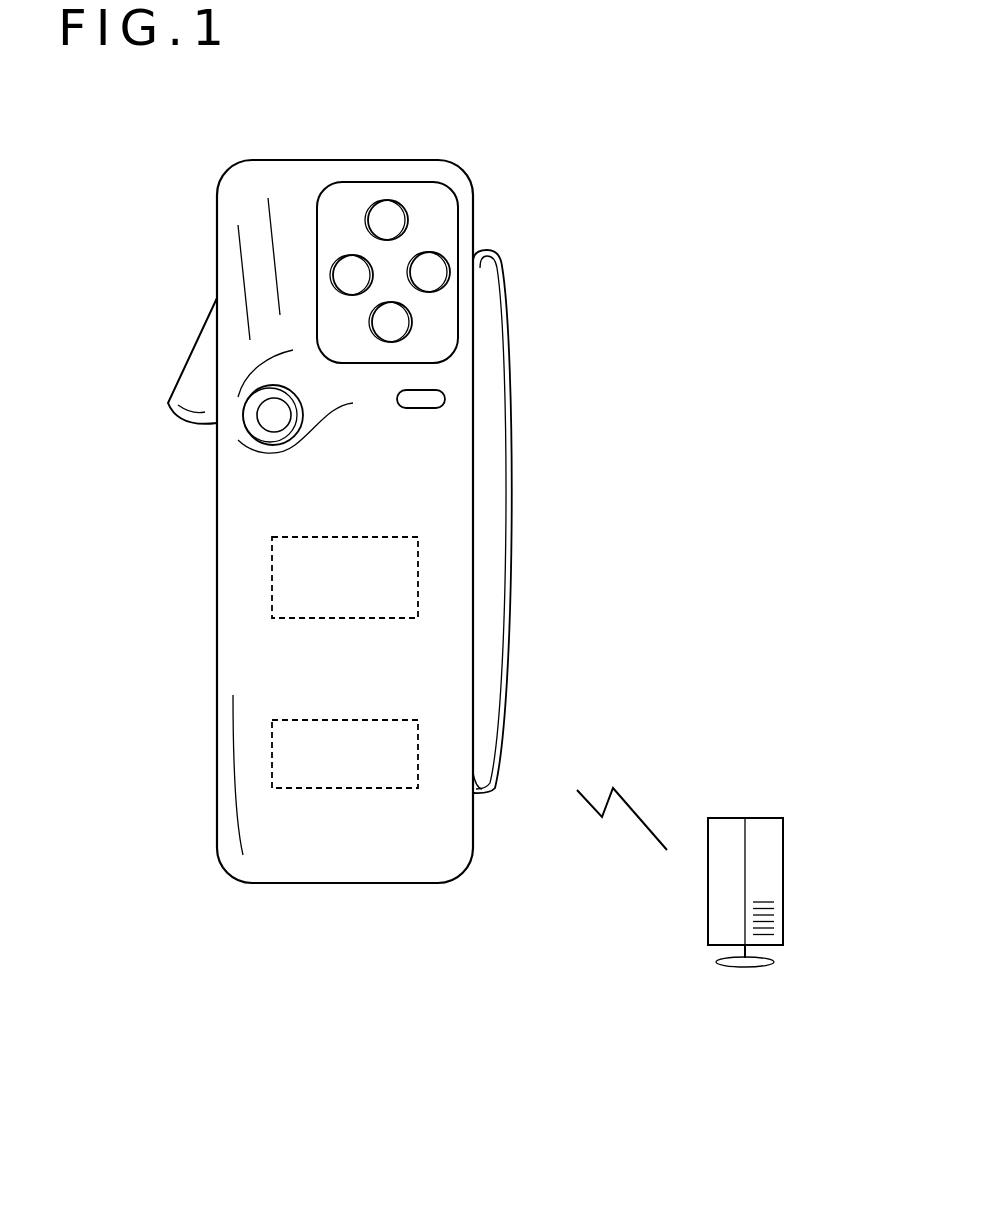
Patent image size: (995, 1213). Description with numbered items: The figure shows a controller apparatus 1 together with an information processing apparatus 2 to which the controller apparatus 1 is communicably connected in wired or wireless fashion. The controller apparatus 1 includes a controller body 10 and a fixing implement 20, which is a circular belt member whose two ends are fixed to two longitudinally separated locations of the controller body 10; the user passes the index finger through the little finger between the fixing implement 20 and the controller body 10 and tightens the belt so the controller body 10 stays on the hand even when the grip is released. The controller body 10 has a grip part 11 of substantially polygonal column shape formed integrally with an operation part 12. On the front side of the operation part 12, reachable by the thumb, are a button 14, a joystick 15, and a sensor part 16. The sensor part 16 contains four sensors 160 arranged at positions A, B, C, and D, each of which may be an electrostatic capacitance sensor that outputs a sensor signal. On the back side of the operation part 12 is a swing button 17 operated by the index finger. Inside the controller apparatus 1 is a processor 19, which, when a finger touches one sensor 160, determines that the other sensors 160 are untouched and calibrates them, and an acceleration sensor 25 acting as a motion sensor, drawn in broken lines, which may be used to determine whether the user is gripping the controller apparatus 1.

The controller apparatus 1 is at (485, 576).
The information processing apparatus 2 is at (783, 848).
The controller body 10 is at (371, 478).
The grip part 11 is at (440, 676).
The operation part 12 is at (240, 462).
The button 14 is at (445, 398).
The joystick 15 is at (260, 417).
The sensor part 16 is at (419, 225).
The swing button 17 is at (192, 350).
The processor 19 is at (345, 577).
The fixing implement 20 is at (512, 368).
The acceleration sensor 25 is at (345, 754).
The sensor 160 is at (349, 255).